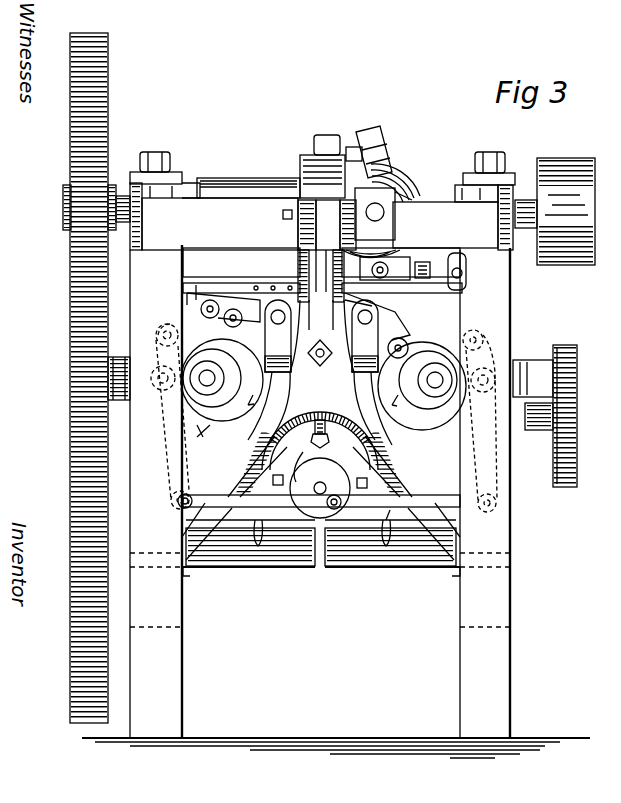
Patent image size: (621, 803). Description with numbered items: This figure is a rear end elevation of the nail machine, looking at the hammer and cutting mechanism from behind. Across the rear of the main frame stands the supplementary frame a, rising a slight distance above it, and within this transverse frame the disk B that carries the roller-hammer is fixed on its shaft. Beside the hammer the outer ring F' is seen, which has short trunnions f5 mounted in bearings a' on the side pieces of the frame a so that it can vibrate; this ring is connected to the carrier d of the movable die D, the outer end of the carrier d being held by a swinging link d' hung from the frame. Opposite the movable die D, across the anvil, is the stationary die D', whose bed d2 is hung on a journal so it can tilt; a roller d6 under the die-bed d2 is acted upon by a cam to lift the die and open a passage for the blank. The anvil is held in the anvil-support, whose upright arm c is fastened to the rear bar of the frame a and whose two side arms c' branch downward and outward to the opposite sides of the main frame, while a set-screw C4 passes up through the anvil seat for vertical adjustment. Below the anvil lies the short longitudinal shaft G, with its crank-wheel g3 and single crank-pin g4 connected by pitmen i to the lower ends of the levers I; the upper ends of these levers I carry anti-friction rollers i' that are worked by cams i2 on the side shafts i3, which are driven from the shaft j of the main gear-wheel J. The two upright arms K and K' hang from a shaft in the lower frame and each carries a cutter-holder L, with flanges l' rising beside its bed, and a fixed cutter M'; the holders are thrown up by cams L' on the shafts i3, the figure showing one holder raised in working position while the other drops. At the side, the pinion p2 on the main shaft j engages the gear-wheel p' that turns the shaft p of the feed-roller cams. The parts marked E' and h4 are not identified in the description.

The main gear-wheel J is at (83, 378).
The supplementary frame a is at (220, 224).
The bearings a' is at (385, 173).
The disk B is at (317, 182).
The upright arm c is at (285, 223).
The side arms c' is at (321, 494).
The set-screw C4 is at (320, 414).
The carrier d is at (425, 285).
The swinging link d' is at (277, 295).
The die-bed d2 is at (196, 285).
The roller d6 is at (197, 357).
The movable die D is at (402, 280).
The stationary die D' is at (241, 270).
The segment E' is at (403, 181).
The trunnions f5 is at (392, 190).
The outer ring F' is at (371, 130).
The shaft G is at (318, 494).
The crank-wheel g3 is at (322, 500).
The crank-pin g4 is at (336, 508).
The arm h4 is at (303, 452).
The pitmen i is at (398, 559).
The anti-friction rollers i' is at (283, 351).
The cams i2 is at (200, 375).
The side shafts i3 is at (204, 383).
The levers I is at (168, 450).
The main shaft j is at (558, 378).
The upright arm K is at (233, 448).
The upright arm K' is at (392, 566).
The cutter-holder L is at (312, 320).
The cam L' is at (323, 407).
The flange l' is at (198, 440).
The fixed cutter M' is at (320, 372).
The shaft p is at (579, 416).
The gear-wheel p' is at (582, 424).
The pinion p2 is at (563, 378).